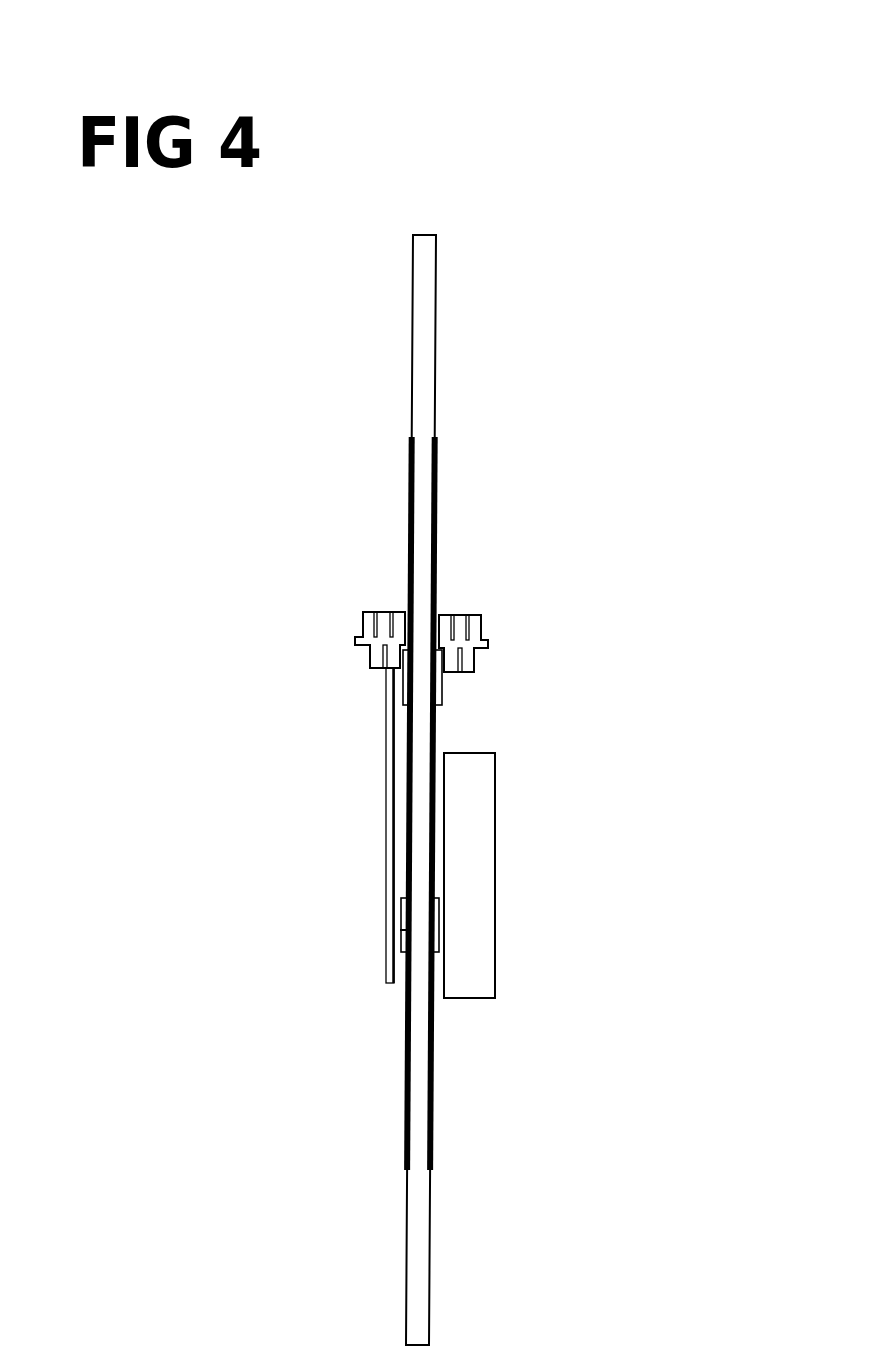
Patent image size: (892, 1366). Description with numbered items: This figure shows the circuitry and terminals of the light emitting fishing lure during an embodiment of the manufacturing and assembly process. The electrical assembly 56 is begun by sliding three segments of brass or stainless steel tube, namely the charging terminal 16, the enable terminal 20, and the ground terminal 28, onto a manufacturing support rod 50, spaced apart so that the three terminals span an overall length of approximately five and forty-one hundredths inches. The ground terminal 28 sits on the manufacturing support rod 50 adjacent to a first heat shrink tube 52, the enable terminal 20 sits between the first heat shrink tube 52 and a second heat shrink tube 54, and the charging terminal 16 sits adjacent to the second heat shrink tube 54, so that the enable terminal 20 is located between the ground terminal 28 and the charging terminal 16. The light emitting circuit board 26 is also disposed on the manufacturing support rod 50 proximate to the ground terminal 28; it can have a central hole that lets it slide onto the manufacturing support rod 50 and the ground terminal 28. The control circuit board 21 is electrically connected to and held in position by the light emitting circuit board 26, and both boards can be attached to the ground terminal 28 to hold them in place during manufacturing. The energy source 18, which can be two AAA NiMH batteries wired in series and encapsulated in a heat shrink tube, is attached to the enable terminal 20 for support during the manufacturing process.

The electrical assembly 56 is at (503, 152).
The manufacturing support rod 50 is at (435, 370).
The ground terminal 28 is at (435, 523).
The light emitting circuit board 26 is at (488, 645).
The first heat shrink tube 52 is at (441, 693).
The enable terminal 20 is at (437, 732).
The control circuit board 21 is at (383, 785).
The energy source 18 is at (495, 865).
The second heat shrink tube 54 is at (431, 930).
The charging terminal 16 is at (432, 1092).